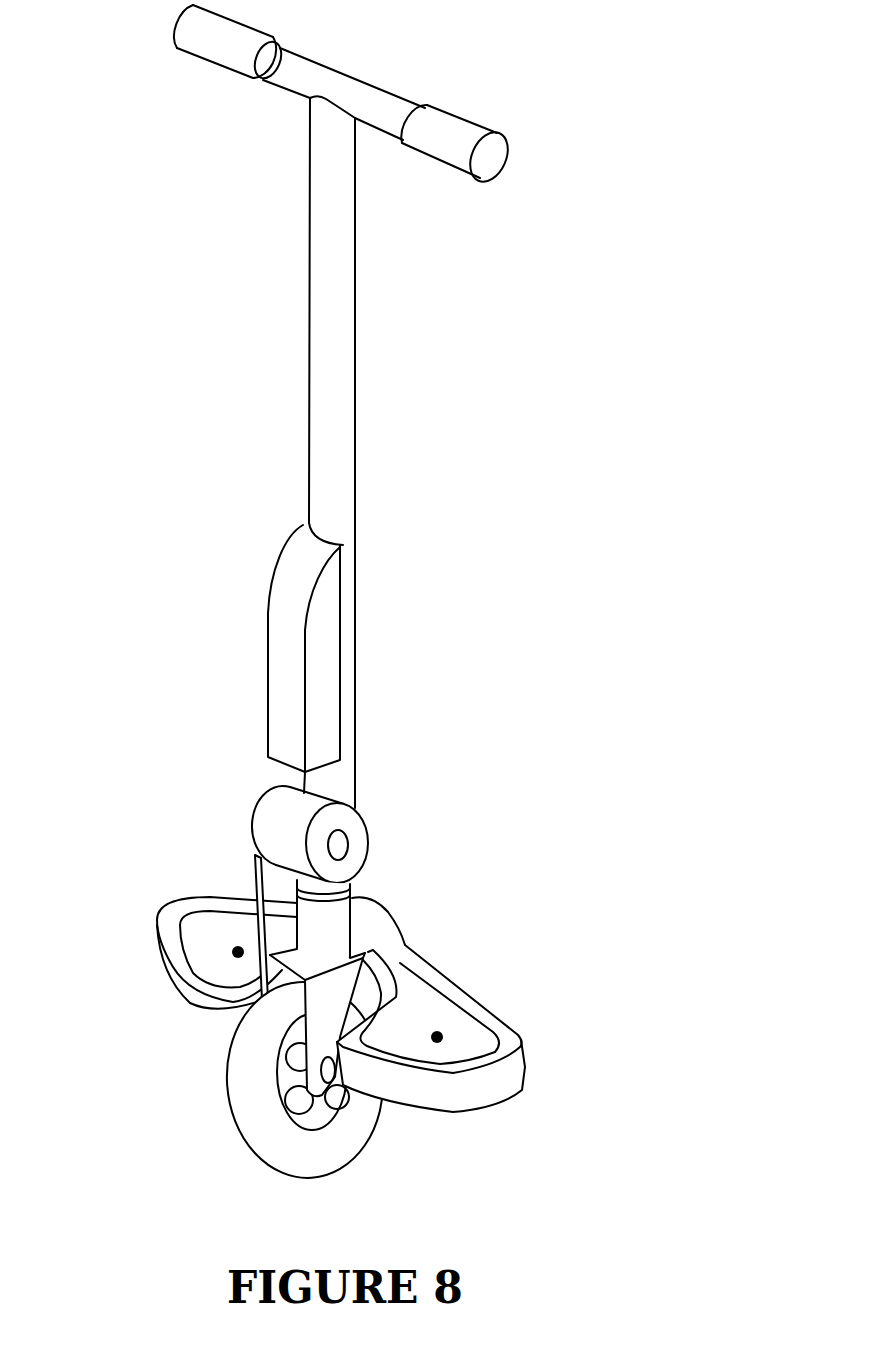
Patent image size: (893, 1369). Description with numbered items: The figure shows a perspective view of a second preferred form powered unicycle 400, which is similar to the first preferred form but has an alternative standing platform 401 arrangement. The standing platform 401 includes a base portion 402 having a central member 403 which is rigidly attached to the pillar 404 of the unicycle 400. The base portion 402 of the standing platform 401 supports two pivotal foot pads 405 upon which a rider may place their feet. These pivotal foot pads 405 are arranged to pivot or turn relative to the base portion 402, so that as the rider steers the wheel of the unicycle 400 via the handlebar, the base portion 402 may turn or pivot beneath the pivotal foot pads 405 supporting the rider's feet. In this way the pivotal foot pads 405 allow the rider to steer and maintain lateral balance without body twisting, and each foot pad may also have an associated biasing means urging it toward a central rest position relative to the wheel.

The powered unicycle 400 is at (393, 594).
The standing platform 401 is at (366, 984).
The base portion 402 is at (460, 985).
The central member 403 is at (372, 927).
The pillar 404 is at (322, 420).
The pivotal foot pads 405 is at (205, 938).